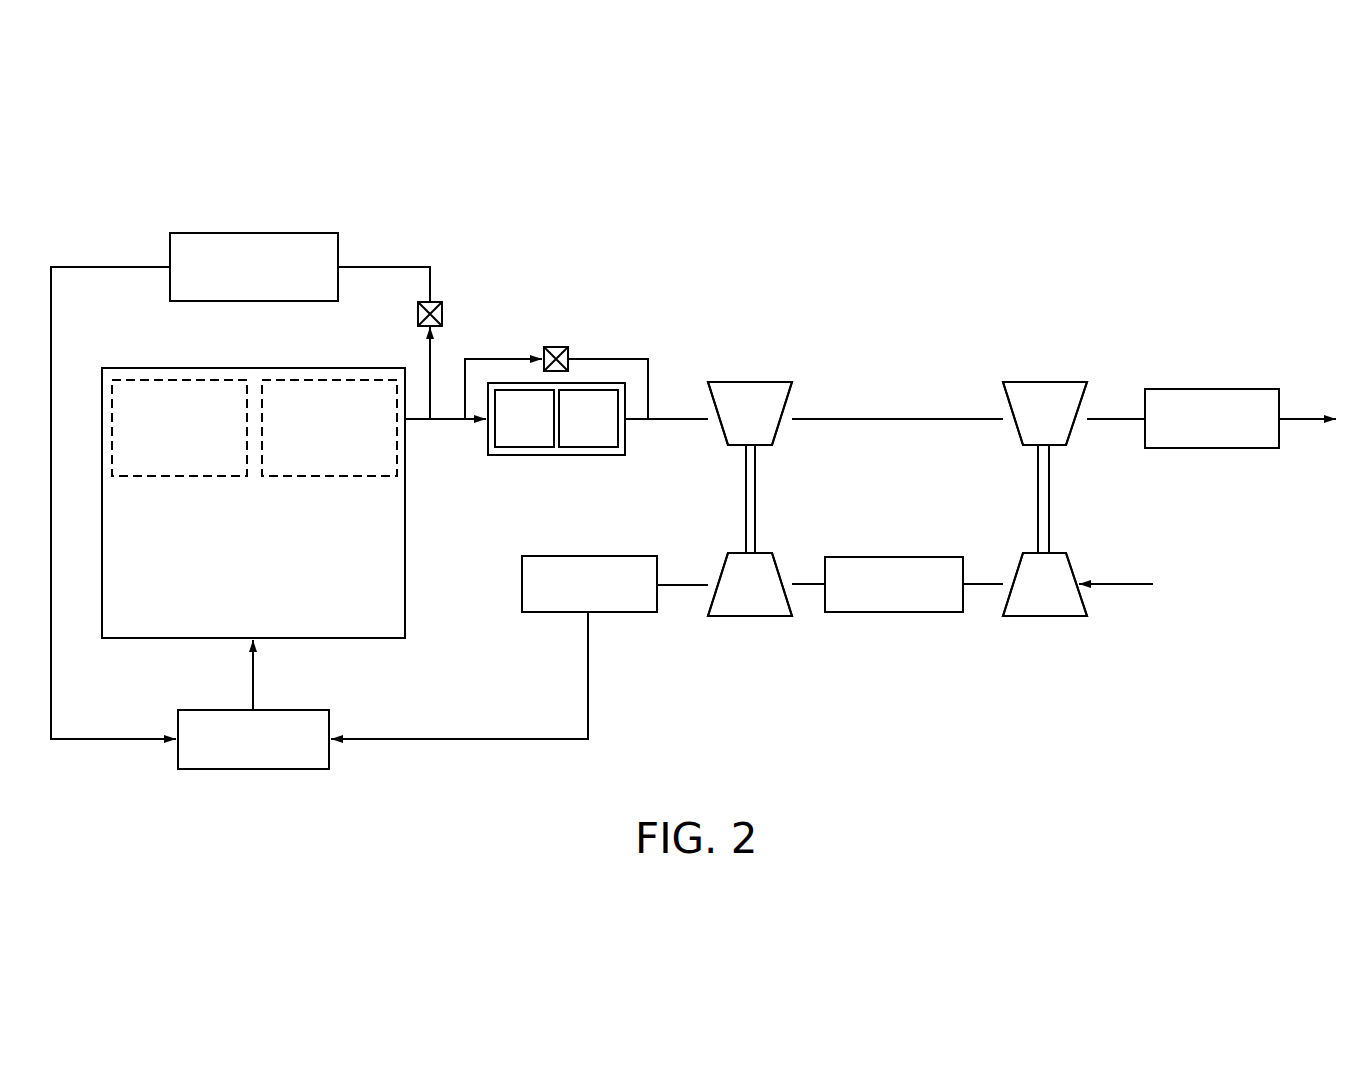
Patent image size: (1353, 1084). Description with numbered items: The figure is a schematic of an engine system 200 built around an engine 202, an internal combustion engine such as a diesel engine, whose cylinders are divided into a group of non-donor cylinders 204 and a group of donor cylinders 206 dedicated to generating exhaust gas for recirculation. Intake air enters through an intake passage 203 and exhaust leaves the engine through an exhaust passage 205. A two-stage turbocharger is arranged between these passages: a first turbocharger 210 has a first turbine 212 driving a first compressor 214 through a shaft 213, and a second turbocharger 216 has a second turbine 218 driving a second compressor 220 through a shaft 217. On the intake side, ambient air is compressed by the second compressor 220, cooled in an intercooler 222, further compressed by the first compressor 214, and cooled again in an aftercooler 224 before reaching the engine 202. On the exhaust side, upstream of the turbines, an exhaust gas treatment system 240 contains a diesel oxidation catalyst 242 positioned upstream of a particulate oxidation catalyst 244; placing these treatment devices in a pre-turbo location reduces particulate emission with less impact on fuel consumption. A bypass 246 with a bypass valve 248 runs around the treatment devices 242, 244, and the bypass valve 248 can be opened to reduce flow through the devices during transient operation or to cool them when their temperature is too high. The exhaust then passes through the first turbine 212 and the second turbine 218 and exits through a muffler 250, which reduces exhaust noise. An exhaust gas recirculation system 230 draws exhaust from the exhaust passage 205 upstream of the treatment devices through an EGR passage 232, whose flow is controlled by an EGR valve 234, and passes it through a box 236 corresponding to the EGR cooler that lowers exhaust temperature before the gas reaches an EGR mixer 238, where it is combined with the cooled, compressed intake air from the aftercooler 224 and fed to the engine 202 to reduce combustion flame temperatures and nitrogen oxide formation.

The engine system 200 is at (1091, 190).
The engine 202 is at (268, 569).
The intake passage 203 is at (1118, 581).
The non-donor cylinders 204 is at (194, 465).
The exhaust passage 205 is at (1300, 417).
The donor cylinders 206 is at (344, 465).
The first turbocharger 210 is at (760, 356).
The first turbine 212 is at (766, 422).
The shaft 213 is at (755, 515).
The first compressor 214 is at (766, 601).
The second turbocharger 216 is at (1047, 356).
The shaft 217 is at (1049, 523).
The second turbine 218 is at (1060, 422).
The second compressor 220 is at (1060, 601).
The intercooler 222 is at (910, 596).
The aftercooler 224 is at (604, 594).
The exhaust gas recirculation (EGR) system 230 is at (374, 218).
The EGR passage 232 is at (363, 267).
The EGR valve 234 is at (441, 311).
The EGR cooler 236 is at (268, 281).
The EGR mixer 238 is at (268, 751).
The exhaust gas treatment system 240 is at (625, 316).
The exhaust gas treatment device (diesel oxidation catalyst) 242 is at (540, 444).
The exhaust gas treatment device (particulate oxidation catalyst) 244 is at (604, 444).
The bypass 246 is at (474, 358).
The bypass valve 248 is at (557, 347).
The muffler 250 is at (1228, 427).